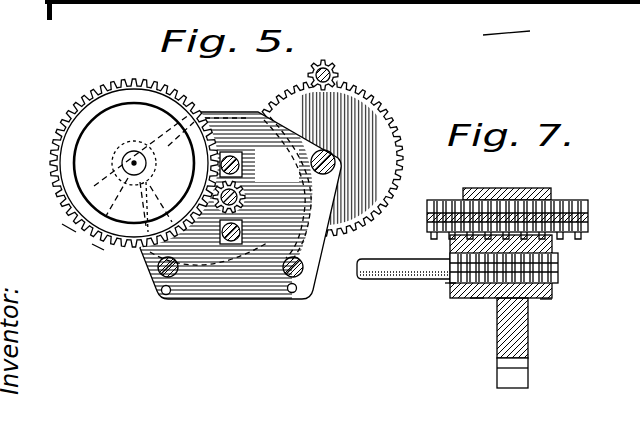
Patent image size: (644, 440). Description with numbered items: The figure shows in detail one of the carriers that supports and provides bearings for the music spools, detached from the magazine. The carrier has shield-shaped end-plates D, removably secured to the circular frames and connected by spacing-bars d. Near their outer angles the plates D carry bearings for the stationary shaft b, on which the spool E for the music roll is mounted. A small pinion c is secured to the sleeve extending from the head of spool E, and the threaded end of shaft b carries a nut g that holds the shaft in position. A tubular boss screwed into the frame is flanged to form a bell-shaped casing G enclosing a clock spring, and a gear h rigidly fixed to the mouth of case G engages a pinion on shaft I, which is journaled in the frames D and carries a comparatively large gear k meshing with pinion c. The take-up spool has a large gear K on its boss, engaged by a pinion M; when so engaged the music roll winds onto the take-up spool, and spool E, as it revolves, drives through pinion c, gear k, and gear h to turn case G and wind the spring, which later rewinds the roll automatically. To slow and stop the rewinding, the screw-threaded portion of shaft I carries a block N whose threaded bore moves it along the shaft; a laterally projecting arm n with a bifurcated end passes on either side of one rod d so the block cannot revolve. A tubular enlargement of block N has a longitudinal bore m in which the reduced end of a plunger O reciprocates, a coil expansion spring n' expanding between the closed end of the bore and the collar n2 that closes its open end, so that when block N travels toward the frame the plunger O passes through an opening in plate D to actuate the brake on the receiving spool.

In FIG. 5, the music roll spool E is at (530, 3).
In FIG. 5, the gear on take-up spool K is at (384, 101).
In FIG. 5, the end-plate D is at (258, 298).
In FIG. 5, the spacing-bar d is at (153, 264).
In FIG. 5, the gear on shaft I k is at (247, 112).
In FIG. 5, the pinion l is at (244, 201).
In FIG. 5, the bell-shaped casing G is at (98, 122).
In FIG. 5, the nut g is at (126, 186).
In FIG. 5, the stationary shaft b is at (123, 160).
In FIG. 5, the pinion M is at (332, 68).
In FIG. 5, the gear on casing h is at (75, 212).
In FIG. 5, the pinion c is at (89, 247).
In FIG. 7, the shaft I is at (580, 200).
In FIG. 7, the block N is at (553, 247).
In FIG. 7, the plunger O is at (395, 283).
In FIG. 7, the laterally projecting arm n is at (528, 343).
In FIG. 7, the coil expansion spring n' is at (556, 315).
In FIG. 7, the collar n2 is at (447, 282).
In FIG. 7, the longitudinal bore m is at (473, 299).